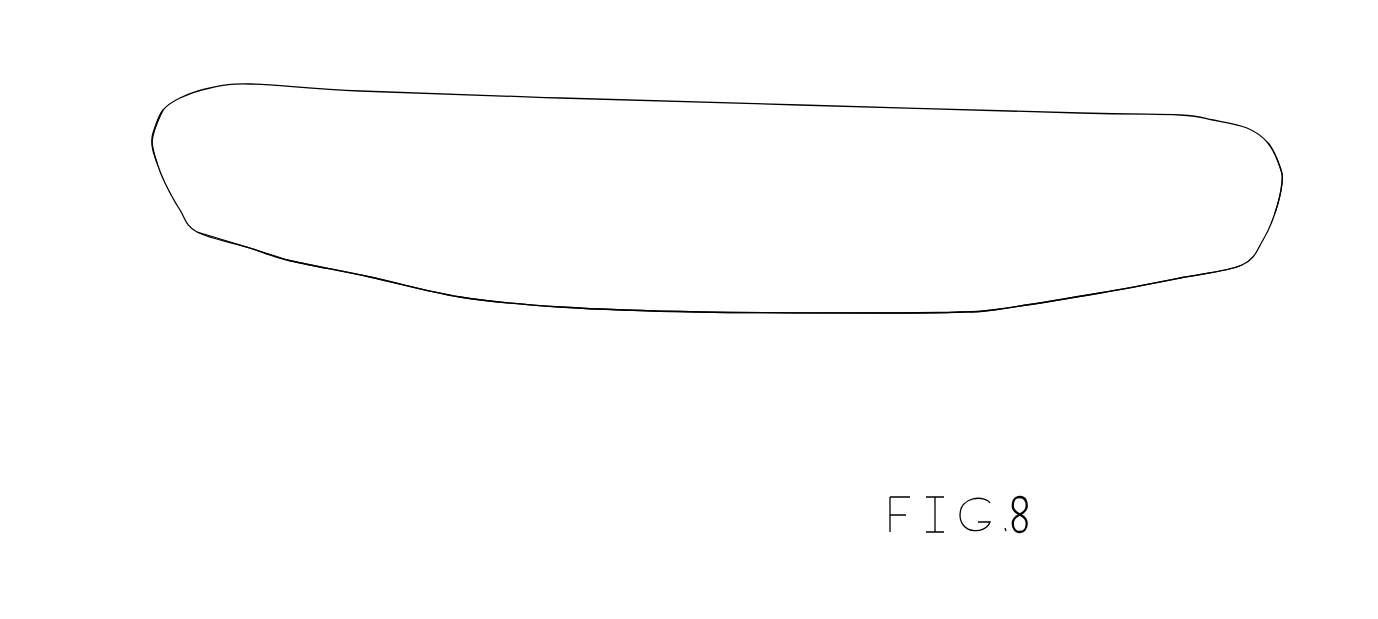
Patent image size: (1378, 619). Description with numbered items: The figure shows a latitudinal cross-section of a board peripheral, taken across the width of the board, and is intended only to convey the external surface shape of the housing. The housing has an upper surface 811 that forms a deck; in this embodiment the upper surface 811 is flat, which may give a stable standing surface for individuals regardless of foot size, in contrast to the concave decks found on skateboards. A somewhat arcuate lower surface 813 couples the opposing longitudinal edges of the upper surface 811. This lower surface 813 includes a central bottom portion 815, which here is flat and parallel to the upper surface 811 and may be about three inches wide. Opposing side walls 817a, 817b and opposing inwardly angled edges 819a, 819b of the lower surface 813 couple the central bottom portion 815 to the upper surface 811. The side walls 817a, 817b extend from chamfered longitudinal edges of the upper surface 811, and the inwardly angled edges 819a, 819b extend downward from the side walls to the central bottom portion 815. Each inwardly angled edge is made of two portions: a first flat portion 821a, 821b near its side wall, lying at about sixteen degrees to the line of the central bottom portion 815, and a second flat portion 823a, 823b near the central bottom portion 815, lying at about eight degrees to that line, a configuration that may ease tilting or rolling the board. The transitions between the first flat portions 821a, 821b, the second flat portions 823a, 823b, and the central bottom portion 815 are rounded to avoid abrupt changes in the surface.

The upper surface 811 is at (652, 73).
The somewhat arcuate lower surface 813 is at (423, 377).
The central bottom portion 815 is at (768, 313).
The side wall 817a is at (1300, 175).
The side wall 817b is at (153, 152).
The inwardly angled edge 819a is at (1160, 343).
The inwardly angled edge 819b is at (340, 327).
The first flat portion 821a is at (1190, 310).
The first flat portion 821b is at (312, 265).
The second flat portion 823a is at (1022, 310).
The second flat portion 823b is at (492, 305).